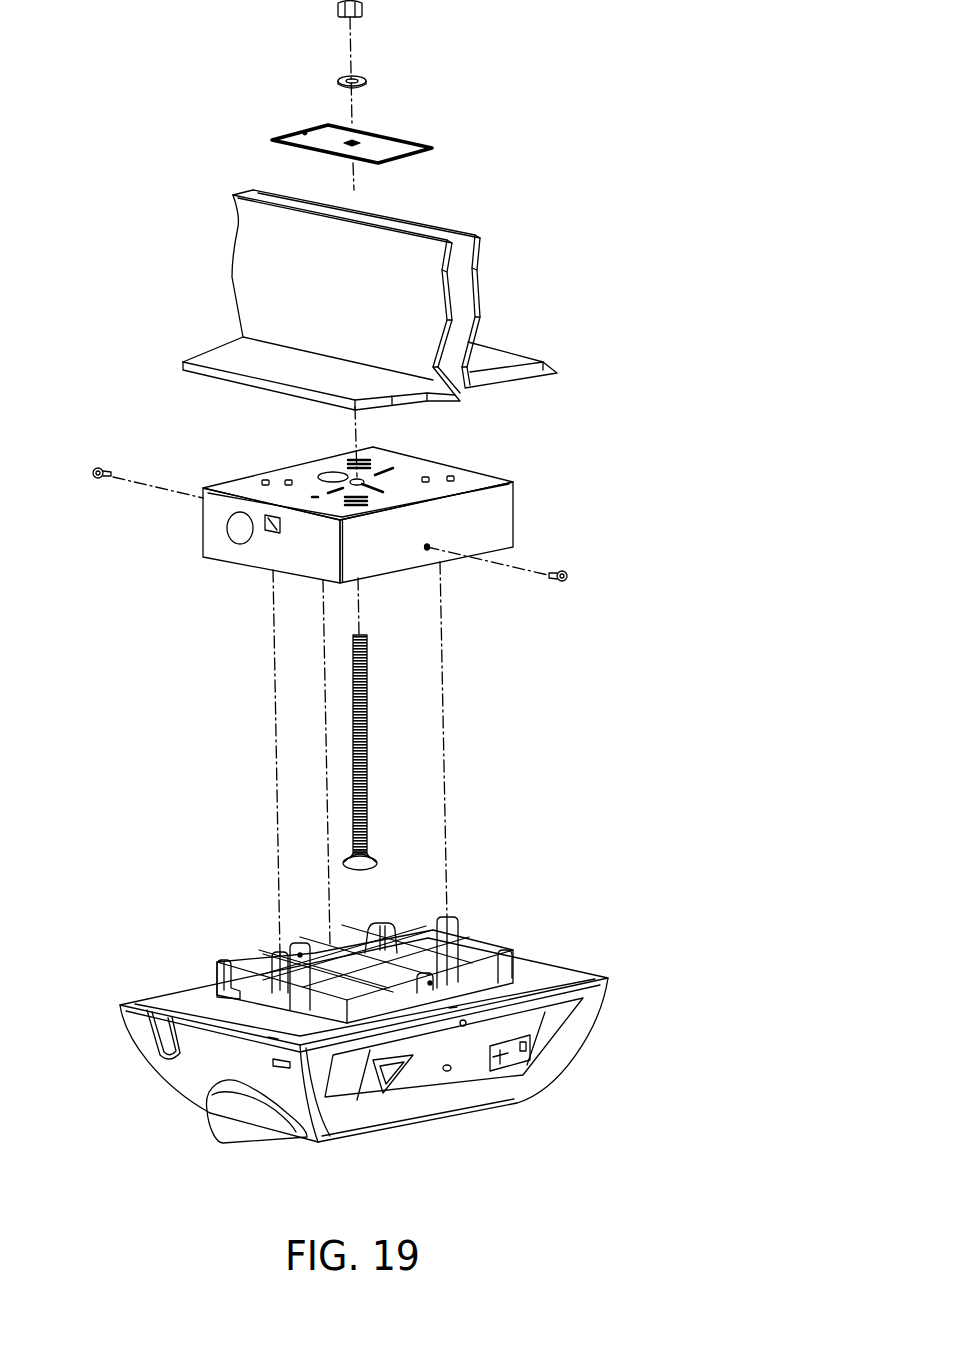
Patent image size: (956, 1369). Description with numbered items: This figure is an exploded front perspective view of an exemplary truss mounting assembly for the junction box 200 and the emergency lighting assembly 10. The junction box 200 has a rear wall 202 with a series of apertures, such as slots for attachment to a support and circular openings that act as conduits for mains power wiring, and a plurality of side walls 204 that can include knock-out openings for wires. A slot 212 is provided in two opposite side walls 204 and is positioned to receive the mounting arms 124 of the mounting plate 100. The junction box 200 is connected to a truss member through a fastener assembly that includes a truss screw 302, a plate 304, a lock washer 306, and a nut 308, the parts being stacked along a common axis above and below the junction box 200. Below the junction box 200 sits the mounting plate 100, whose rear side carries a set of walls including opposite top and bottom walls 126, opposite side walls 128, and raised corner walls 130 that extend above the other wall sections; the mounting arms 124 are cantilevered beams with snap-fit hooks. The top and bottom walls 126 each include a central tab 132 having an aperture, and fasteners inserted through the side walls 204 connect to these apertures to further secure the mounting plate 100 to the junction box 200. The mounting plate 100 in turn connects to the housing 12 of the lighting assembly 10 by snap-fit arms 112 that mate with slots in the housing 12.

The emergency lighting assembly 10 is at (335, 1071).
The housing 12 is at (335, 1040).
The mounting plate 100 is at (371, 1007).
The arms 112 is at (287, 1069).
The mounting arms 124 is at (458, 930).
The top and bottom walls 126 is at (493, 983).
The side walls 128 is at (170, 987).
The raised corner walls 130 is at (217, 970).
The central tab 132 is at (432, 985).
The junction box 200 is at (360, 527).
The rear wall 202 is at (472, 470).
The side walls 204 is at (217, 540).
The slot 212 is at (267, 532).
The truss screw 302 is at (370, 740).
The plate 304 is at (432, 147).
The lock washer 306 is at (338, 81).
The nut 308 is at (362, 5).